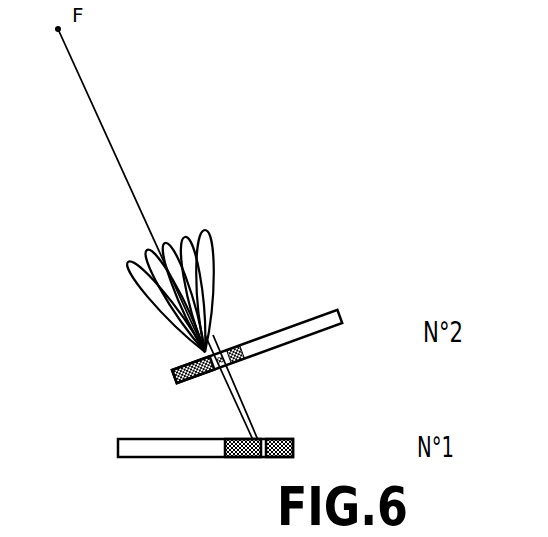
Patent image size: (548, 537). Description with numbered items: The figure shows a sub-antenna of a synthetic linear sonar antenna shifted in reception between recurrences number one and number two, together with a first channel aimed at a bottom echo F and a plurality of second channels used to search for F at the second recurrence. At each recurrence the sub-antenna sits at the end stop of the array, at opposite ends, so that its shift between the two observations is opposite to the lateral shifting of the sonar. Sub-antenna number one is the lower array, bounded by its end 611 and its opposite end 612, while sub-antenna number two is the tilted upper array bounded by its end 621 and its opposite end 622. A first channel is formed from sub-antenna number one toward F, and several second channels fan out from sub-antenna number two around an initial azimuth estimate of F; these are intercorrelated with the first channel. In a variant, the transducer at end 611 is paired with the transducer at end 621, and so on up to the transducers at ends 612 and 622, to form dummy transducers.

The end of sub-antenna No. 1 611 is at (222, 457).
The end of sub-antenna No. 1 612 is at (295, 450).
The end of sub-antenna No. 2 621 is at (172, 379).
The end of sub-antenna No. 2 622 is at (250, 354).